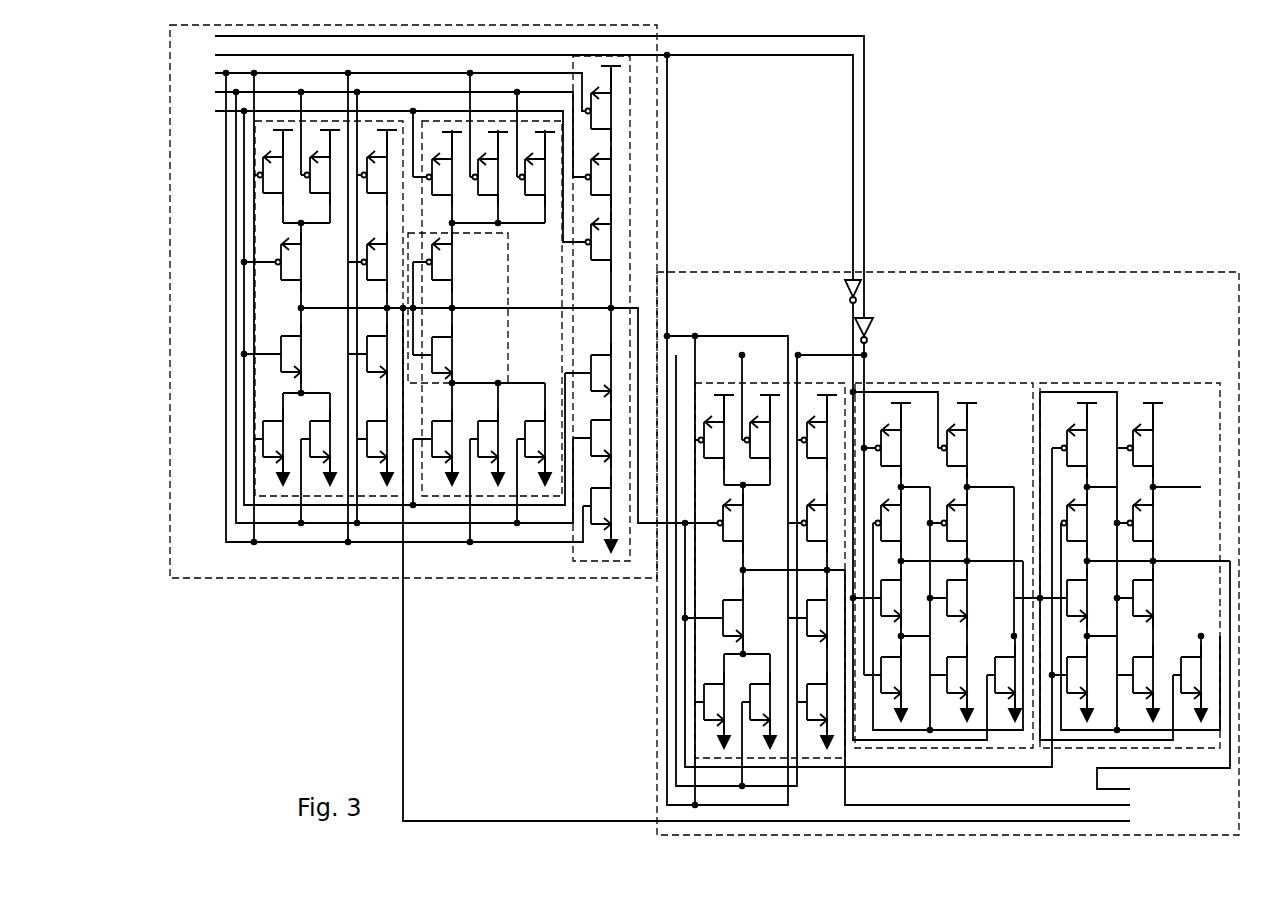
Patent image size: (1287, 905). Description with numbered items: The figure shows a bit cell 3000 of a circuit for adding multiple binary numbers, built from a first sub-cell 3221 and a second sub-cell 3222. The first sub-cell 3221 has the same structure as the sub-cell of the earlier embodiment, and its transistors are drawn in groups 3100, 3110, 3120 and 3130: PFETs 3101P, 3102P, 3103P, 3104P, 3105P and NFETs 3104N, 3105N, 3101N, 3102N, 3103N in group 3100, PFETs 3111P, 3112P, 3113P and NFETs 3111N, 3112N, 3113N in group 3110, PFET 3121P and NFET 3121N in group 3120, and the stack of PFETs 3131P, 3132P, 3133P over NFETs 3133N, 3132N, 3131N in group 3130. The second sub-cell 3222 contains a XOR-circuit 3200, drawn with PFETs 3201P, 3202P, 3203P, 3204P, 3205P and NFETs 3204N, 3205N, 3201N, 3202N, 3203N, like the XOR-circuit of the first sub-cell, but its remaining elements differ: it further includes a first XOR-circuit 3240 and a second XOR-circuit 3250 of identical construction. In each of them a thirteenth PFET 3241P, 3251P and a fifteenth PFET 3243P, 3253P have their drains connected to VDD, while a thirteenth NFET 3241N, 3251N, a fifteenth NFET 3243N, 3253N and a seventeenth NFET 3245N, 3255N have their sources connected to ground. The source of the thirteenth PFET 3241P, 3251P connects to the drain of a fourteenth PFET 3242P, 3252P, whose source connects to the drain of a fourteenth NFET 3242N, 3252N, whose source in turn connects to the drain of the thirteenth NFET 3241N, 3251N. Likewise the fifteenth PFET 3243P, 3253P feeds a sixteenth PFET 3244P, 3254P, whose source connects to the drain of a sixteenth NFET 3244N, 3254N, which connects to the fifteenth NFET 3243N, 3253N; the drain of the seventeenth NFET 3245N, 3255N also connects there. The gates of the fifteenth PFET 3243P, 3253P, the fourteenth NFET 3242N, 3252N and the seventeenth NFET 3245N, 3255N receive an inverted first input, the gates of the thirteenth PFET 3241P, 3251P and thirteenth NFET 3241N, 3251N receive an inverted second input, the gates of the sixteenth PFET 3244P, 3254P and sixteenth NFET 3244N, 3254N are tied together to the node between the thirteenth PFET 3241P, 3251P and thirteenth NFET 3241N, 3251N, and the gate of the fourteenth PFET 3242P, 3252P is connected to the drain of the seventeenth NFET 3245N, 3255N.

The bit cell 3000 is at (704, 430).
The first sub-cell 3221 is at (650, 423).
The second sub-cell 3222 is at (924, 445).
The first transistor network 3100 is at (291, 308).
The second transistor network 3110 is at (501, 308).
The intermediate transistor pair 3120 is at (483, 308).
The transistor stack 3130 is at (665, 308).
The XOR-circuit 3200 is at (728, 570).
The first XOR-circuit 3240 is at (945, 543).
The second XOR-circuit 3250 is at (1135, 543).
The transistor 3101P is at (280, 167).
The transistor 3102P is at (327, 167).
The transistor 3103P is at (384, 167).
The transistor 3104P is at (298, 262).
The transistor 3105P is at (384, 262).
The transistor 3104N is at (301, 354).
The transistor 3105N is at (387, 354).
The transistor 3101N is at (283, 447).
The transistor 3102N is at (330, 447).
The transistor 3103N is at (387, 447).
The transistor 3111P is at (449, 169).
The transistor 3112P is at (495, 169).
The transistor 3113P is at (542, 169).
The transistor 3111N is at (452, 447).
The transistor 3112N is at (498, 447).
The transistor 3113N is at (545, 447).
The transistor 3121P is at (449, 262).
The transistor 3121N is at (452, 355).
The transistor 3131P is at (608, 103).
The transistor 3132P is at (608, 177).
The transistor 3133P is at (608, 242).
The transistor 3133N is at (611, 373).
The transistor 3132N is at (611, 438).
The transistor 3131N is at (611, 514).
The PMOS transistor 3201P is at (721, 432).
The PMOS transistor 3202P is at (767, 432).
The PMOS transistor 3203P is at (824, 432).
The PMOS transistor 3204P is at (740, 523).
The PMOS transistor 3205P is at (824, 523).
The NMOS transistor 3204N is at (743, 618).
The NMOS transistor 3205N is at (827, 618).
The NMOS transistor 3201N is at (724, 710).
The NMOS transistor 3202N is at (770, 710).
The NMOS transistor 3203N is at (827, 710).
The thirteenth PFET 3241P is at (898, 440).
The fifteenth PFET 3243P is at (964, 440).
The fourteenth PFET 3242P is at (898, 523).
The sixteenth PFET 3244P is at (964, 523).
The fourteenth NFET 3242N is at (901, 598).
The sixteenth NFET 3244N is at (967, 598).
The thirteenth NFET 3241N is at (901, 683).
The fifteenth NFET 3243N is at (967, 683).
The seventeenth NFET 3245N is at (1015, 683).
The thirteenth PFET 3251P is at (1084, 440).
The fifteenth PFET 3253P is at (1150, 440).
The fourteenth PFET 3252P is at (1084, 523).
The sixteenth PFET 3254P is at (1150, 523).
The fourteenth NFET 3252N is at (1087, 598).
The sixteenth NFET 3254N is at (1153, 598).
The thirteenth NFET 3251N is at (1087, 683).
The fifteenth NFET 3253N is at (1153, 683).
The seventeenth NFET 3255N is at (1201, 683).